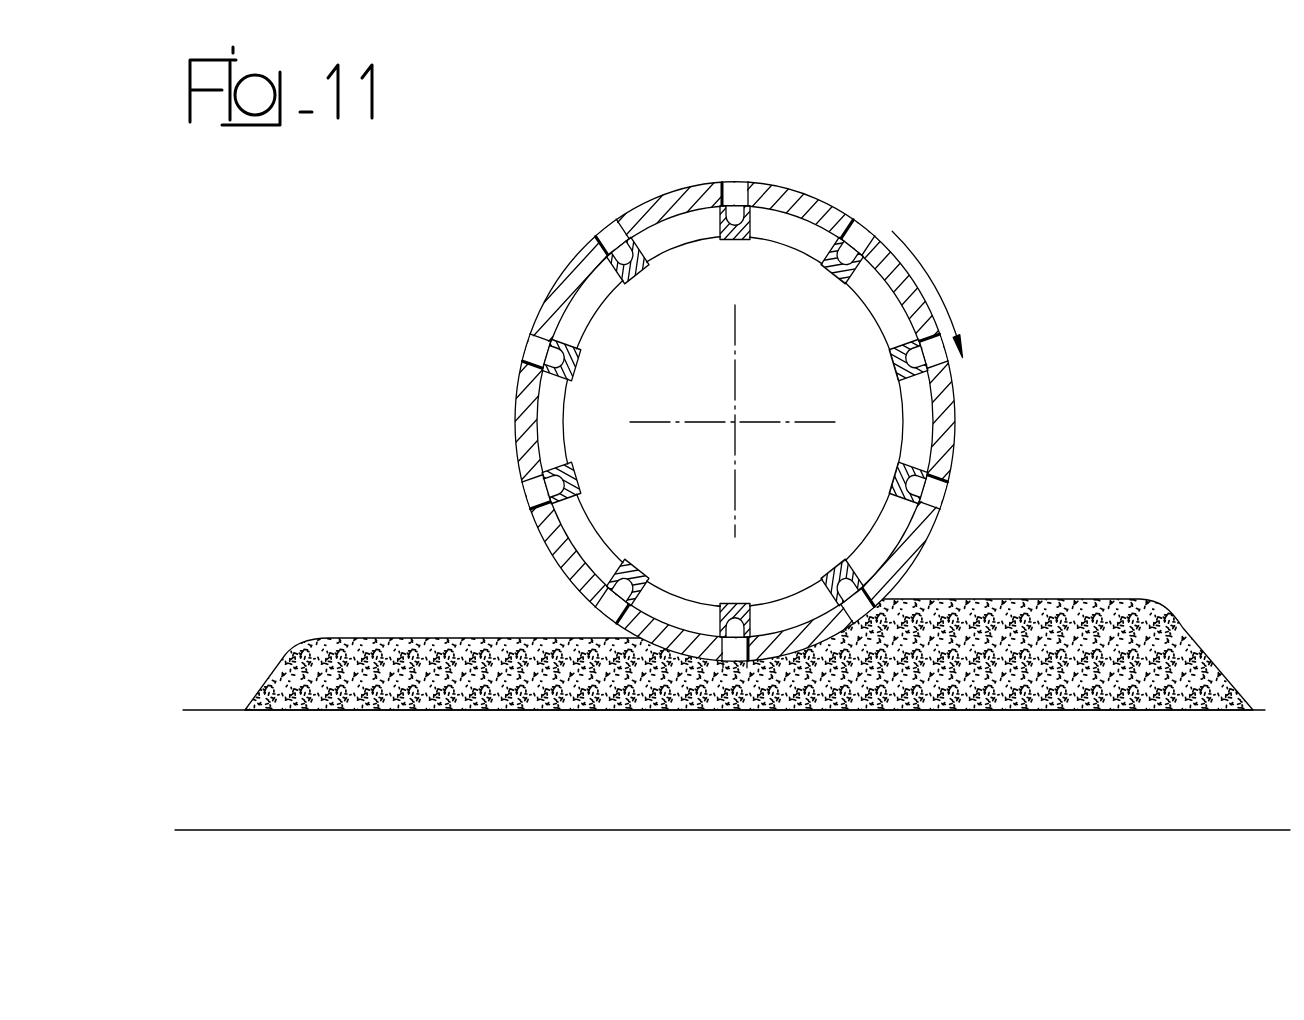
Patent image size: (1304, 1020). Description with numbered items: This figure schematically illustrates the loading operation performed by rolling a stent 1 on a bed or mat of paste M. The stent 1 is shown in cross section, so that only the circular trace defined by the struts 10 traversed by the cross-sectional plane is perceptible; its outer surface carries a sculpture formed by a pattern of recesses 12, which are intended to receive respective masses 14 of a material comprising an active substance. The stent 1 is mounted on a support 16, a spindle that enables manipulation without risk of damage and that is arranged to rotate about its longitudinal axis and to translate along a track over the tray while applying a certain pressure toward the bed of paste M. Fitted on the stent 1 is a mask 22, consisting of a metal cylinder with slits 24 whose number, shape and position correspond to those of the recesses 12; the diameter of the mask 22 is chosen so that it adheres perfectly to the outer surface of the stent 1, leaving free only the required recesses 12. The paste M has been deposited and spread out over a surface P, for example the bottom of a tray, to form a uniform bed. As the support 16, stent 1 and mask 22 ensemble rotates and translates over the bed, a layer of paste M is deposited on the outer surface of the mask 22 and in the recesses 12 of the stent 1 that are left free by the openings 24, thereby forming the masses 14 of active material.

The stent 1 is at (674, 398).
The struts 10 is at (577, 356).
The recesses 12 is at (923, 353).
The masses 14 is at (652, 641).
The support 16 is at (840, 310).
The mask 22 is at (803, 200).
The slits 24 is at (607, 220).
The paste M is at (377, 650).
The surface P is at (732, 787).